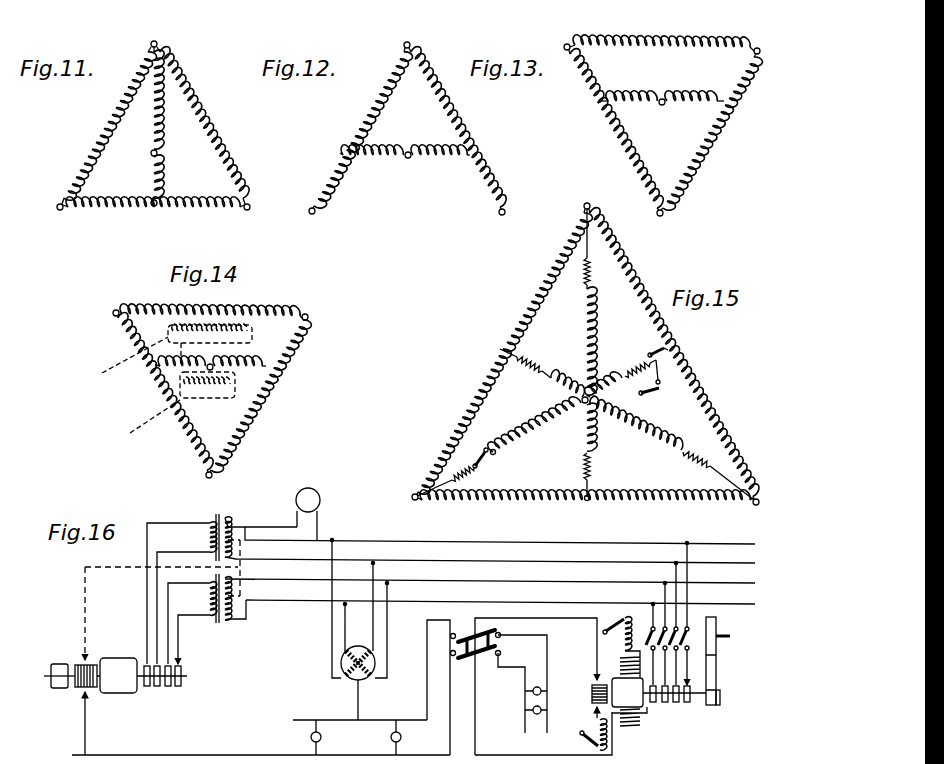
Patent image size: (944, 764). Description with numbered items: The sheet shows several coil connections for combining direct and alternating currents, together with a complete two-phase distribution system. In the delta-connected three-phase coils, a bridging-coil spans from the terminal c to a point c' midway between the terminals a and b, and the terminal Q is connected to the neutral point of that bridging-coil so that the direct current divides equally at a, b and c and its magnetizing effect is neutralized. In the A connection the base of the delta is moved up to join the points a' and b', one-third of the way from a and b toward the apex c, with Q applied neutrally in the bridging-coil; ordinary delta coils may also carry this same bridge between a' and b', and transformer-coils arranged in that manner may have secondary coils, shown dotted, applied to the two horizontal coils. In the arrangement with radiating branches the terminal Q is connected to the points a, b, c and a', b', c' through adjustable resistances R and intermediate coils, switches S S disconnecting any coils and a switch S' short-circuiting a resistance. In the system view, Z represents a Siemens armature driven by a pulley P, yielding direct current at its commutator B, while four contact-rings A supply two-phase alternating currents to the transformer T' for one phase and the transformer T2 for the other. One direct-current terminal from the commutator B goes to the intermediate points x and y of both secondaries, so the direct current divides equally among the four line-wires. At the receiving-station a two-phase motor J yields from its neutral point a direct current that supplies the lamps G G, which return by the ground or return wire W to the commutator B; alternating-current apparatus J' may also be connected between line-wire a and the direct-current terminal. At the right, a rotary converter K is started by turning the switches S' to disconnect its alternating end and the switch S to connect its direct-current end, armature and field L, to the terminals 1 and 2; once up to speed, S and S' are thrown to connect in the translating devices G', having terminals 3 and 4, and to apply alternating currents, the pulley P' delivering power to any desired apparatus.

In FIG. 11, the terminal a is at (52, 215).
In FIG. 12, the terminal a is at (309, 219).
In FIG. 13, the terminal a is at (563, 37).
In FIG. 14, the terminal a is at (108, 313).
In FIG. 15, the terminal a is at (407, 498).
In FIG. 11, the terminal b is at (254, 216).
In FIG. 12, the terminal b is at (508, 221).
In FIG. 13, the terminal b is at (761, 38).
In FIG. 14, the terminal b is at (312, 311).
In FIG. 15, the terminal b is at (591, 194).
In FIG. 11, the terminal c is at (153, 34).
In FIG. 12, the terminal c is at (406, 35).
In FIG. 13, the terminal c is at (659, 222).
In FIG. 14, the terminal c is at (208, 484).
In FIG. 15, the terminal c is at (765, 500).
In FIG. 12, the intermediate point a' is at (332, 150).
In FIG. 13, the intermediate point a' is at (592, 95).
In FIG. 14, the intermediate point a' is at (142, 374).
In FIG. 15, the intermediate point a' is at (682, 342).
In FIG. 12, the intermediate point b' is at (482, 155).
In FIG. 13, the intermediate point b' is at (734, 94).
In FIG. 14, the intermediate point b' is at (278, 369).
In FIG. 15, the intermediate point b' is at (587, 510).
In FIG. 11, the intermediate point c' is at (154, 213).
In FIG. 15, the intermediate point c' is at (500, 343).
In FIG. 11, the terminal Q is at (97, 177).
In FIG. 12, the terminal Q is at (368, 198).
In FIG. 13, the terminal Q is at (645, 145).
In FIG. 14, the terminal Q is at (215, 356).
In FIG. 15, the terminal Q is at (540, 447).
In FIG. 15, the adjustable resistance R is at (635, 379).
In FIG. 15, the switch S is at (540, 411).
In FIG. 16, the switch S is at (476, 634).
In FIG. 15, the switch S' is at (650, 398).
In FIG. 16, the switch S' is at (675, 622).
In FIG. 16, the transformer T' is at (207, 537).
In FIG. 16, the transformer T2 is at (207, 598).
In FIG. 16, the intermediate point x is at (258, 512).
In FIG. 16, the intermediate point y is at (232, 619).
In FIG. 16, the alternating-current apparatus J' is at (308, 514).
In FIG. 16, the two-phase motor J is at (353, 673).
In FIG. 16, the lamp G is at (364, 737).
In FIG. 16, the translating device G' is at (536, 710).
In FIG. 16, the Siemens armature Z is at (142, 675).
In FIG. 16, the contact-rings A is at (162, 689).
In FIG. 16, the commutator B is at (92, 723).
In FIG. 16, the pulley P is at (69, 666).
In FIG. 16, the pulley P' is at (720, 667).
In FIG. 16, the ground or return wire W is at (261, 746).
In FIG. 16, the rotary converter K is at (649, 698).
In FIG. 16, the field L is at (613, 684).
In FIG. 16, the terminal 1 is at (449, 637).
In FIG. 16, the terminal 2 is at (448, 653).
In FIG. 16, the terminal 3 is at (504, 632).
In FIG. 16, the terminal 4 is at (504, 657).